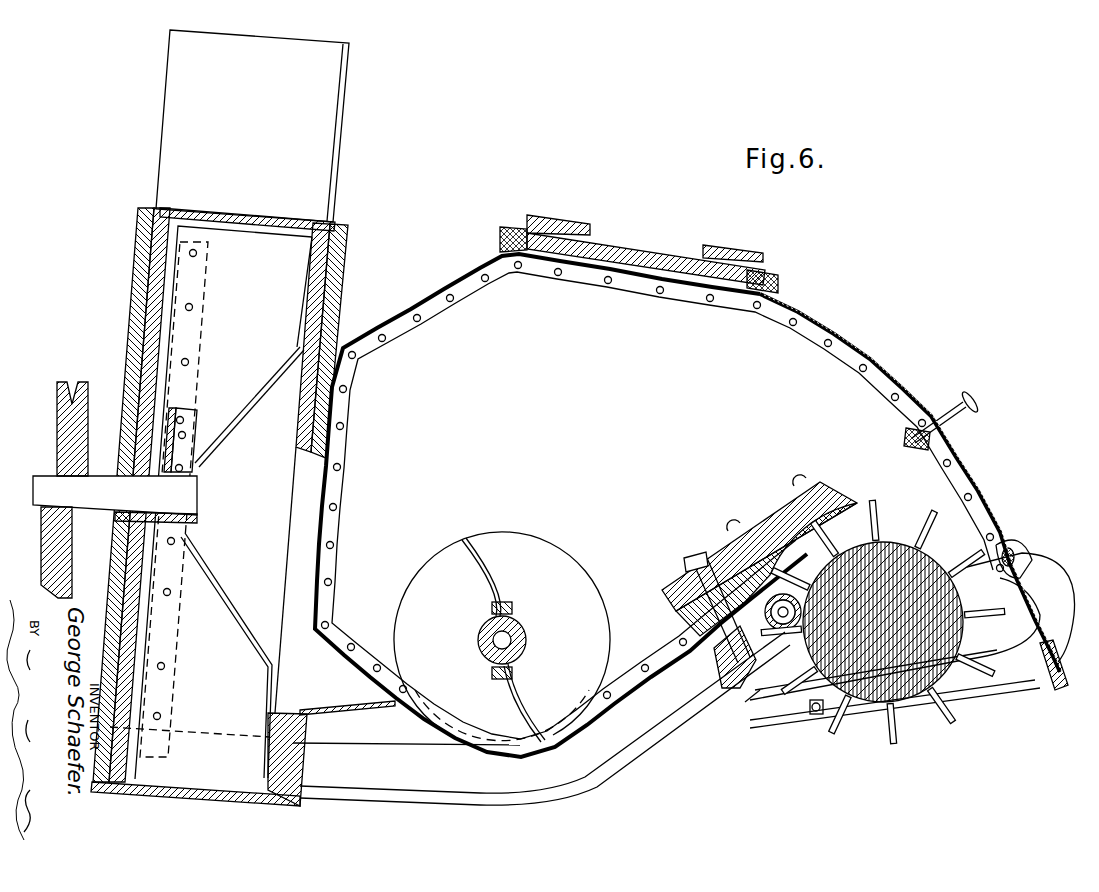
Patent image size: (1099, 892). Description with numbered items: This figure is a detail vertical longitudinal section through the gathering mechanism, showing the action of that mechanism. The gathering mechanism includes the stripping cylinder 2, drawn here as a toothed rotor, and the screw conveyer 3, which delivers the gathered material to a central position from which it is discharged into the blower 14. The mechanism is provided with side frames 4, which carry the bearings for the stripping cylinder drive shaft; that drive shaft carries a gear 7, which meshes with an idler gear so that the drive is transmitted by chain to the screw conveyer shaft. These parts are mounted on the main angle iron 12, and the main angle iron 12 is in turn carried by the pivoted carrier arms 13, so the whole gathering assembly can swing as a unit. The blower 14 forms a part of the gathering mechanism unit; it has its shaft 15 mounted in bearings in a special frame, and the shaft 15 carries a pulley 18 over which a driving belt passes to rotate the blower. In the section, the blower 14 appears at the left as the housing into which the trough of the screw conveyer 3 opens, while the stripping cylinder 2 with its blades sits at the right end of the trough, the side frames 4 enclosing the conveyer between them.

The stripping cylinder 2 is at (883, 622).
The screw conveyer 3 is at (567, 571).
The side frames 4 is at (695, 486).
The gear 7 is at (911, 483).
The main angle iron 12 is at (714, 664).
The pivoted carrier arms 13 is at (590, 783).
The blower 14 is at (258, 481).
The shaft 15 is at (98, 484).
The pulley 18 is at (57, 428).